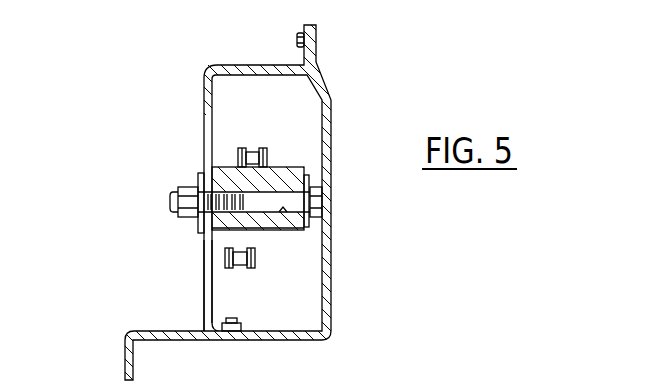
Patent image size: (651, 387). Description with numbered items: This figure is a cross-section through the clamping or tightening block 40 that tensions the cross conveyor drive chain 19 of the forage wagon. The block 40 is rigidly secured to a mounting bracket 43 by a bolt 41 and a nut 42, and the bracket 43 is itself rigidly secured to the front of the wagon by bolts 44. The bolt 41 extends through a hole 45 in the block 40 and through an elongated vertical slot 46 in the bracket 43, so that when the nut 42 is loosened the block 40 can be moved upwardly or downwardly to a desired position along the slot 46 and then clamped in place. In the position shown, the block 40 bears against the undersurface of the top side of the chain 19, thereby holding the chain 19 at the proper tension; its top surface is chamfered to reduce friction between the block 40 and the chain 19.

The cross conveyor drive chain 19 is at (252, 152).
The clamping or tightening block 40 is at (293, 167).
The bolt 41 is at (298, 200).
The nut 42 is at (184, 216).
The mounting bracket 43 is at (204, 89).
The bolts 44 is at (297, 38).
The hole 45 is at (284, 212).
The elongated vertical slot 46 is at (204, 265).